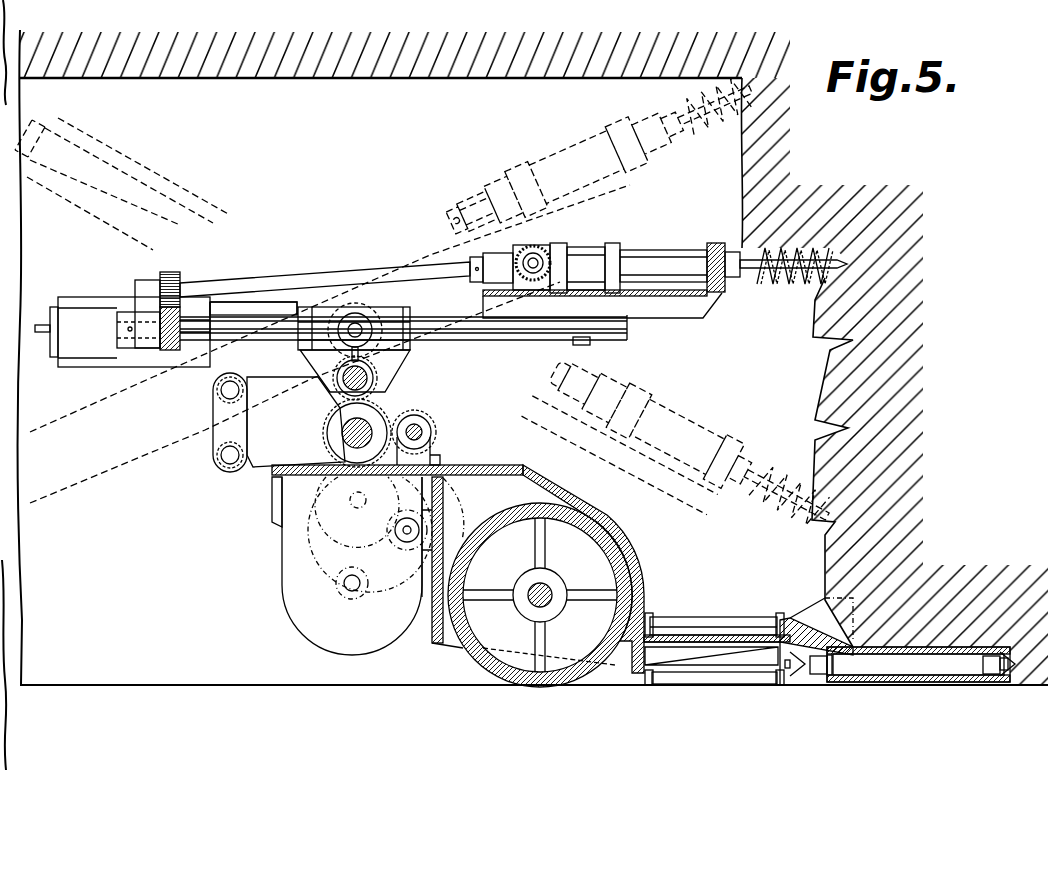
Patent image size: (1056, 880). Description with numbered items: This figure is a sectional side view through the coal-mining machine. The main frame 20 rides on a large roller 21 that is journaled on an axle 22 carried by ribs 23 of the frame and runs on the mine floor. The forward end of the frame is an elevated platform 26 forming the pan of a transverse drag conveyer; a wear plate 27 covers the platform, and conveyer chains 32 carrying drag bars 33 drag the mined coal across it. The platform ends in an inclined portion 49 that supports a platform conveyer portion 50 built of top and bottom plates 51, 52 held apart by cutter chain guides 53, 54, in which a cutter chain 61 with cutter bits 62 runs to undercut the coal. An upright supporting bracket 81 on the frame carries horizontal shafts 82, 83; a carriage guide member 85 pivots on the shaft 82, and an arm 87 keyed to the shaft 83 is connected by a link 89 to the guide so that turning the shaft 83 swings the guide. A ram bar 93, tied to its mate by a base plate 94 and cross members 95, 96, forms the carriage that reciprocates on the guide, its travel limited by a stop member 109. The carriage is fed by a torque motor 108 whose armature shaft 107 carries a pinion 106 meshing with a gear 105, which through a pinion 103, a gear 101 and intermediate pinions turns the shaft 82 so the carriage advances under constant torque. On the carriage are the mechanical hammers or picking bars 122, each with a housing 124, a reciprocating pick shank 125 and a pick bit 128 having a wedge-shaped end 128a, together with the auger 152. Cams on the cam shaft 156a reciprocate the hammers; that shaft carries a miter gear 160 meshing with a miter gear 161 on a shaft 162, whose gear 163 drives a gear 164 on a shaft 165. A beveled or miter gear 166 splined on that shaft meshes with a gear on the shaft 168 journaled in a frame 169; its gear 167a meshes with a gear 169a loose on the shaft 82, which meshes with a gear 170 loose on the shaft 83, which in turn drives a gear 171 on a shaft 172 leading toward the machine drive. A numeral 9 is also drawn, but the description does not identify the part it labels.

The motor shaft 9 is at (57, 350).
The main frame 20 is at (515, 468).
The large roller 21 is at (603, 650).
The axle 22 is at (537, 592).
The ribs 23 is at (455, 645).
The elevated platform 26 is at (697, 642).
The wear plate 27 is at (697, 634).
The conveyer chains 32 is at (652, 620).
The drag bars 33 is at (715, 622).
The inclined portion 49 is at (795, 632).
The platform conveyer portion 50 is at (912, 664).
The top plate 51 is at (950, 652).
The bottom plate 52 is at (888, 681).
The cutter chain guide 53 is at (835, 668).
The cutter chain guide 54 is at (975, 665).
The cutter chain 61 is at (815, 668).
The cutter bits 62 is at (795, 672).
The upright supporting bracket 81 is at (425, 408).
The horizontal shaft 82 is at (343, 376).
The horizontal shaft 83 is at (341, 437).
The carriage guide member 85 is at (243, 302).
The arm 87 is at (255, 460).
The link 89 is at (227, 423).
The ram bar 93 is at (90, 210).
The base plate 94 is at (685, 298).
The cross member 95 is at (715, 248).
The cross member 96 is at (147, 310).
The gear 101 is at (340, 522).
The pinion 103 is at (400, 546).
The gear 105 is at (455, 510).
The pinion 106 is at (345, 578).
The armature shaft 107 is at (352, 592).
The torque motor 108 is at (292, 603).
The stop member 109 is at (575, 343).
The mechanical hammers or picking bars 122 is at (663, 266).
The housing 124 is at (585, 268).
The pick shank 125 is at (746, 266).
The pick bit 128 is at (778, 290).
The wedge-shaped end 128a is at (845, 263).
The auger 152 is at (830, 283).
The cam shaft 156a is at (533, 268).
The miter gear 160 is at (556, 262).
The miter gear 161 is at (520, 248).
The shaft 162 is at (276, 290).
The gear 163 is at (168, 274).
The gear 164 is at (170, 352).
The shaft 165 is at (265, 337).
The beveled or miter gear 166 is at (338, 307).
The gear 167a is at (365, 318).
The shaft 168 is at (355, 327).
The frame 169 is at (415, 318).
The gear 169a is at (385, 396).
The gear 170 is at (335, 420).
The gear 171 is at (440, 428).
The shaft 172 is at (430, 438).